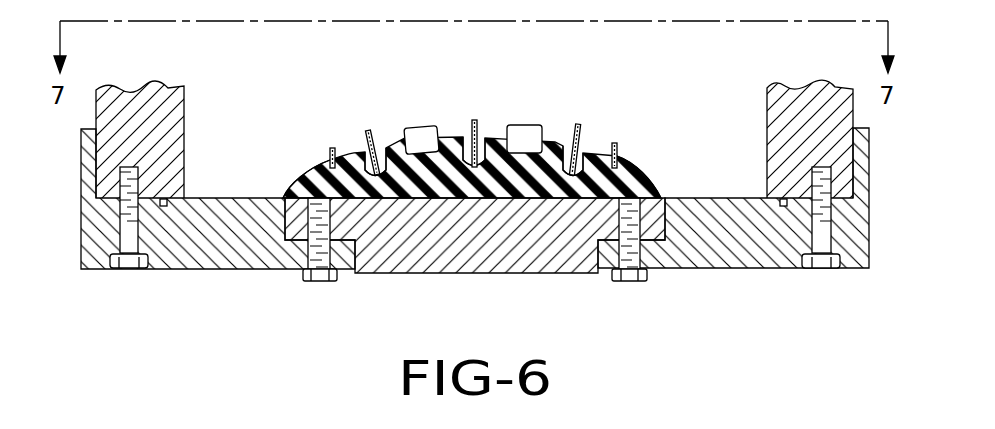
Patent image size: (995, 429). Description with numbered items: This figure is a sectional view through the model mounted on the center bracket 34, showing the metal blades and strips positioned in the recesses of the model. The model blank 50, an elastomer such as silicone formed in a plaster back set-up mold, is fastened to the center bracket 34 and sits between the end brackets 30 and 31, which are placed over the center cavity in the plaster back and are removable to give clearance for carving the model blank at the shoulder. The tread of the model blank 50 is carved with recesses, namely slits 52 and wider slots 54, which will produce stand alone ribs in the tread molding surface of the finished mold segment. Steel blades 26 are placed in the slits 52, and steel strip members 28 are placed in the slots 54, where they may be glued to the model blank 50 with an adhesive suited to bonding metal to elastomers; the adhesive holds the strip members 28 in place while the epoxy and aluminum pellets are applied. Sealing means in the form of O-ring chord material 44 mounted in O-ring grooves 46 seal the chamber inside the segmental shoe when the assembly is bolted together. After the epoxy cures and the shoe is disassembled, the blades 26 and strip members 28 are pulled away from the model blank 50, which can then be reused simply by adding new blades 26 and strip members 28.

The steel blades 26 is at (333, 148).
The steel strip members 28 is at (369, 132).
The end bracket 30 is at (243, 252).
The end bracket 31 is at (706, 248).
The center bracket 34 is at (528, 243).
The O-ring chord material 44 is at (166, 200).
The O-ring grooves 46 is at (170, 208).
The model blank 50 is at (428, 182).
The slits 52 is at (328, 168).
The slots 54 is at (386, 148).